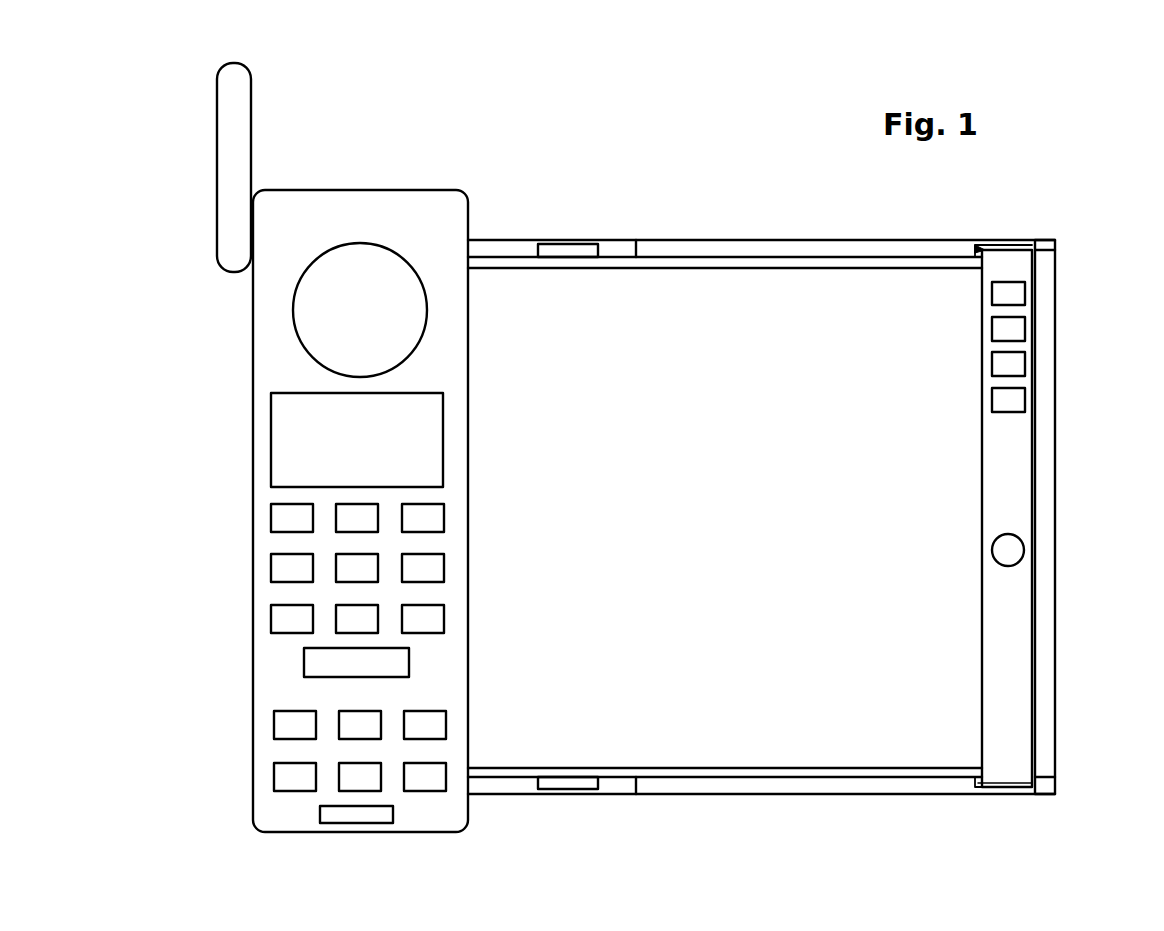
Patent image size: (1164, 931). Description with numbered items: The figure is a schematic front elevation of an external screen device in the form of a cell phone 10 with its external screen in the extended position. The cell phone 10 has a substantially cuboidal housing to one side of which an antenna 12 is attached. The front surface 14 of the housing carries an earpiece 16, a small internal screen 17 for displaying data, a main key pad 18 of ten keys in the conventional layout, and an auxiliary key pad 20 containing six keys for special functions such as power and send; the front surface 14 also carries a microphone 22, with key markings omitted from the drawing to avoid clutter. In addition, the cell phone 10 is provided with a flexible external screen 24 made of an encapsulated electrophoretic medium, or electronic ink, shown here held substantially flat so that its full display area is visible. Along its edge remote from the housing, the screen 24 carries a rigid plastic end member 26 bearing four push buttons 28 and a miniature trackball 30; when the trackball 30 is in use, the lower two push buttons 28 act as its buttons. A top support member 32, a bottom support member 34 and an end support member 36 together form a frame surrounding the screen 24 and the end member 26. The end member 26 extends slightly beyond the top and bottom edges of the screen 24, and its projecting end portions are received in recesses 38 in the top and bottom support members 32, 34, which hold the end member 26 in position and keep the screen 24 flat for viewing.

The cell phone 10 is at (503, 211).
The antenna 12 is at (233, 167).
The front surface 14 is at (300, 222).
The earpiece 16 is at (368, 298).
The internal screen 17 is at (343, 454).
The main key pad 18 is at (336, 557).
The auxiliary key pad 20 is at (357, 727).
The microphone 22 is at (357, 817).
The flexible external screen 24 is at (713, 511).
The end member 26 is at (1005, 687).
The push buttons 28 is at (1003, 295).
The miniature trackball 30 is at (1008, 550).
The top support member 32 is at (690, 248).
The bottom support member 34 is at (690, 784).
The end support member 36 is at (1042, 753).
The recesses 38 is at (977, 250).